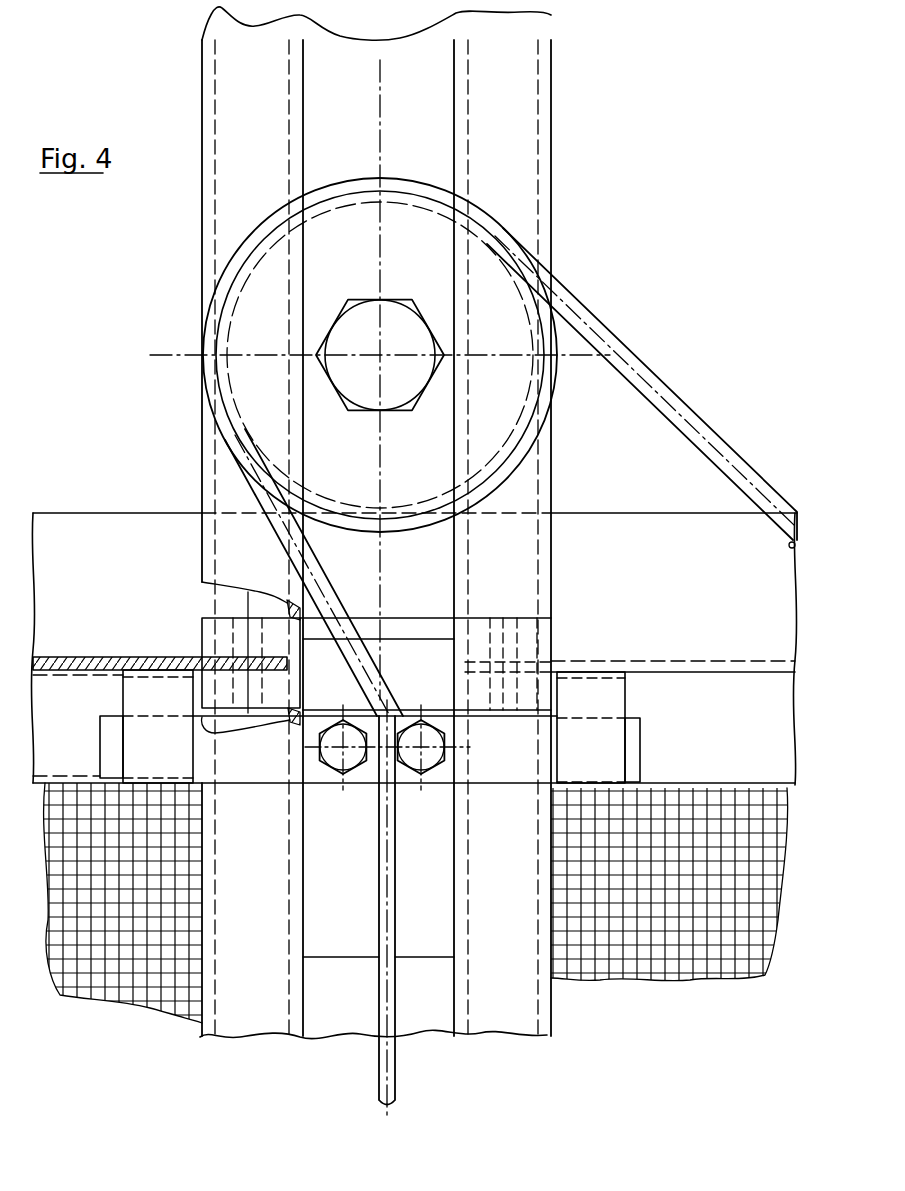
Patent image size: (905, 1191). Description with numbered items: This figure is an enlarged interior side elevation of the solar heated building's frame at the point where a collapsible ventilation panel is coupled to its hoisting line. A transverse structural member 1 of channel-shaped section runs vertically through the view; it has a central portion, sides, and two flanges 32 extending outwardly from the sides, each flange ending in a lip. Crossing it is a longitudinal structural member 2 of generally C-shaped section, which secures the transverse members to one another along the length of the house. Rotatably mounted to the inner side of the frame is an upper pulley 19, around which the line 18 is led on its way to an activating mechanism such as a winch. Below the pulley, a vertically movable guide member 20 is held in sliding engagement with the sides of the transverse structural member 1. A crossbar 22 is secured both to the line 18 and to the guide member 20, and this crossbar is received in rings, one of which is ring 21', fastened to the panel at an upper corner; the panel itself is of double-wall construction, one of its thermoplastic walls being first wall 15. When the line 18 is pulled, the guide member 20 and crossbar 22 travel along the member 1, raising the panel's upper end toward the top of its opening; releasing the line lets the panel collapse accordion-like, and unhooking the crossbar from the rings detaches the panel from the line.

The transverse structural member 1 is at (522, 133).
The structural member 2 is at (80, 657).
The first wall 15 is at (650, 960).
The line 18 is at (622, 356).
The upper pulley 19 is at (505, 305).
The vertically movable guide member 20 is at (412, 657).
The ring 21' is at (625, 727).
The crossbar 22 is at (635, 754).
The flange 32 is at (237, 1018).